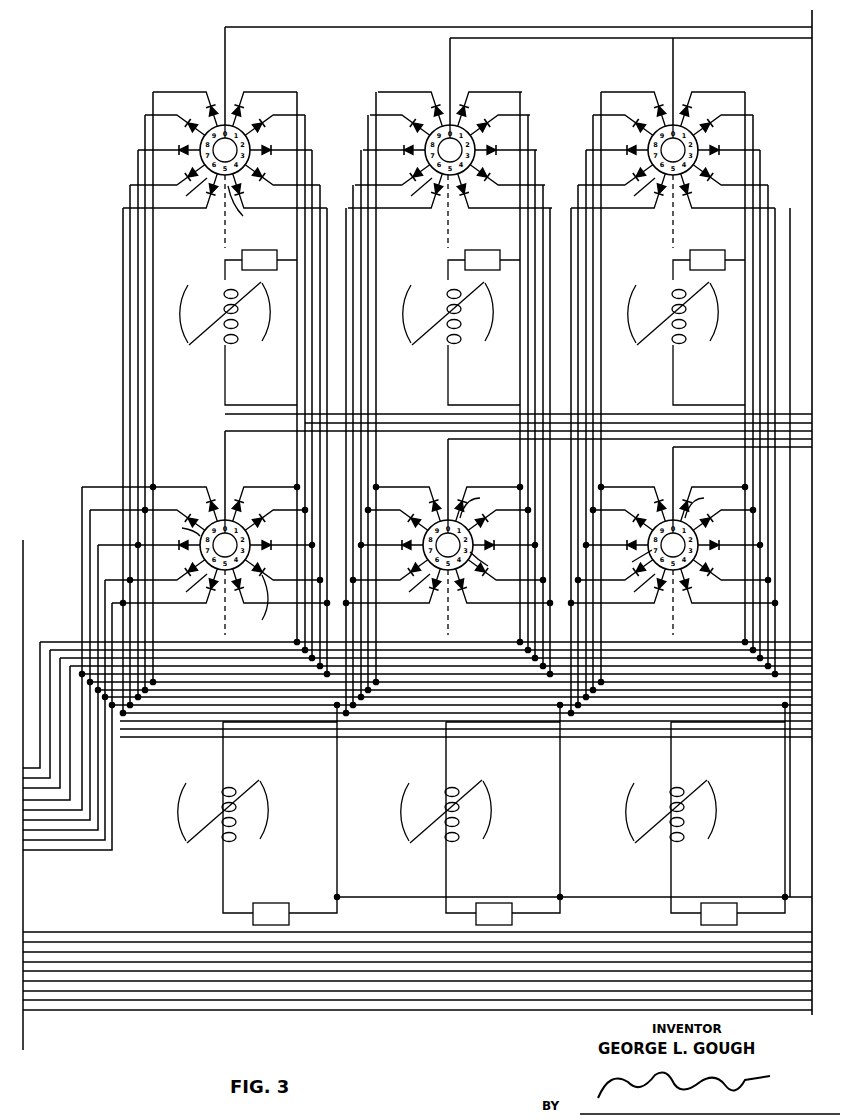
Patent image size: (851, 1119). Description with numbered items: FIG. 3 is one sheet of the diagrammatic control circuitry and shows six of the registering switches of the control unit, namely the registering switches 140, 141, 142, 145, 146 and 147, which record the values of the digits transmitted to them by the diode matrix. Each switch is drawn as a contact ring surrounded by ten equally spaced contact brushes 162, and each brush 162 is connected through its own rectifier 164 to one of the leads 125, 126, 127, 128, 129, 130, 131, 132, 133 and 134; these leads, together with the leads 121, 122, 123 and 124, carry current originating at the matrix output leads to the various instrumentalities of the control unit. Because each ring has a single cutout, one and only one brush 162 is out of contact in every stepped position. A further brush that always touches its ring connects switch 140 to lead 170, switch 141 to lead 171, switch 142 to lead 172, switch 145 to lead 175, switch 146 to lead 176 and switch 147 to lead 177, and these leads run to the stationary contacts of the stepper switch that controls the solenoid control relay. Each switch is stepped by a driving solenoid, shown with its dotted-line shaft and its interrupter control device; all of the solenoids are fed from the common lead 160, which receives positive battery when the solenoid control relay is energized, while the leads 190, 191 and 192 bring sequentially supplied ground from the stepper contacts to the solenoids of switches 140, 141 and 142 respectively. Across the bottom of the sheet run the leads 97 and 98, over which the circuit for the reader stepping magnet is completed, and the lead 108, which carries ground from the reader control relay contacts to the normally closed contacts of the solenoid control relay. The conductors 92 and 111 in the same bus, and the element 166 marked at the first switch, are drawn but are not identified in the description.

The conductor 92 is at (312, 971).
The lead 97 is at (88, 932).
The lead 98 is at (142, 942).
The lead 108 is at (400, 962).
The conductor 111 is at (204, 952).
The lead 121 is at (215, 981).
The lead 122 is at (145, 991).
The lead 123 is at (85, 1000).
The lead 124 is at (23, 1010).
The lead 125 is at (90, 765).
The lead 126 is at (98, 750).
The lead 127 is at (105, 735).
The lead 128 is at (112, 718).
The lead 129 is at (68, 640).
The lead 130 is at (60, 648).
The lead 131 is at (50, 855).
The lead 132 is at (60, 838).
The lead 133 is at (70, 793).
The lead 134 is at (82, 779).
The registering switch 140 is at (232, 480).
The registering switch 141 is at (457, 480).
The registering switch 142 is at (681, 480).
The registering switch 145 is at (243, 82).
The registering switch 146 is at (468, 82).
The registering switch 147 is at (690, 82).
The lead 160 is at (337, 770).
The contact brush 162 is at (177, 528).
The rectifier 164 is at (254, 603).
The switch contact 166 is at (250, 205).
The lead 170 is at (418, 431).
The lead 171 is at (640, 437).
The lead 172 is at (706, 447).
The lead 175 is at (370, 27).
The lead 176 is at (592, 38).
The lead 177 is at (778, 38).
The lead 190 is at (258, 722).
The lead 191 is at (483, 722).
The lead 192 is at (725, 722).